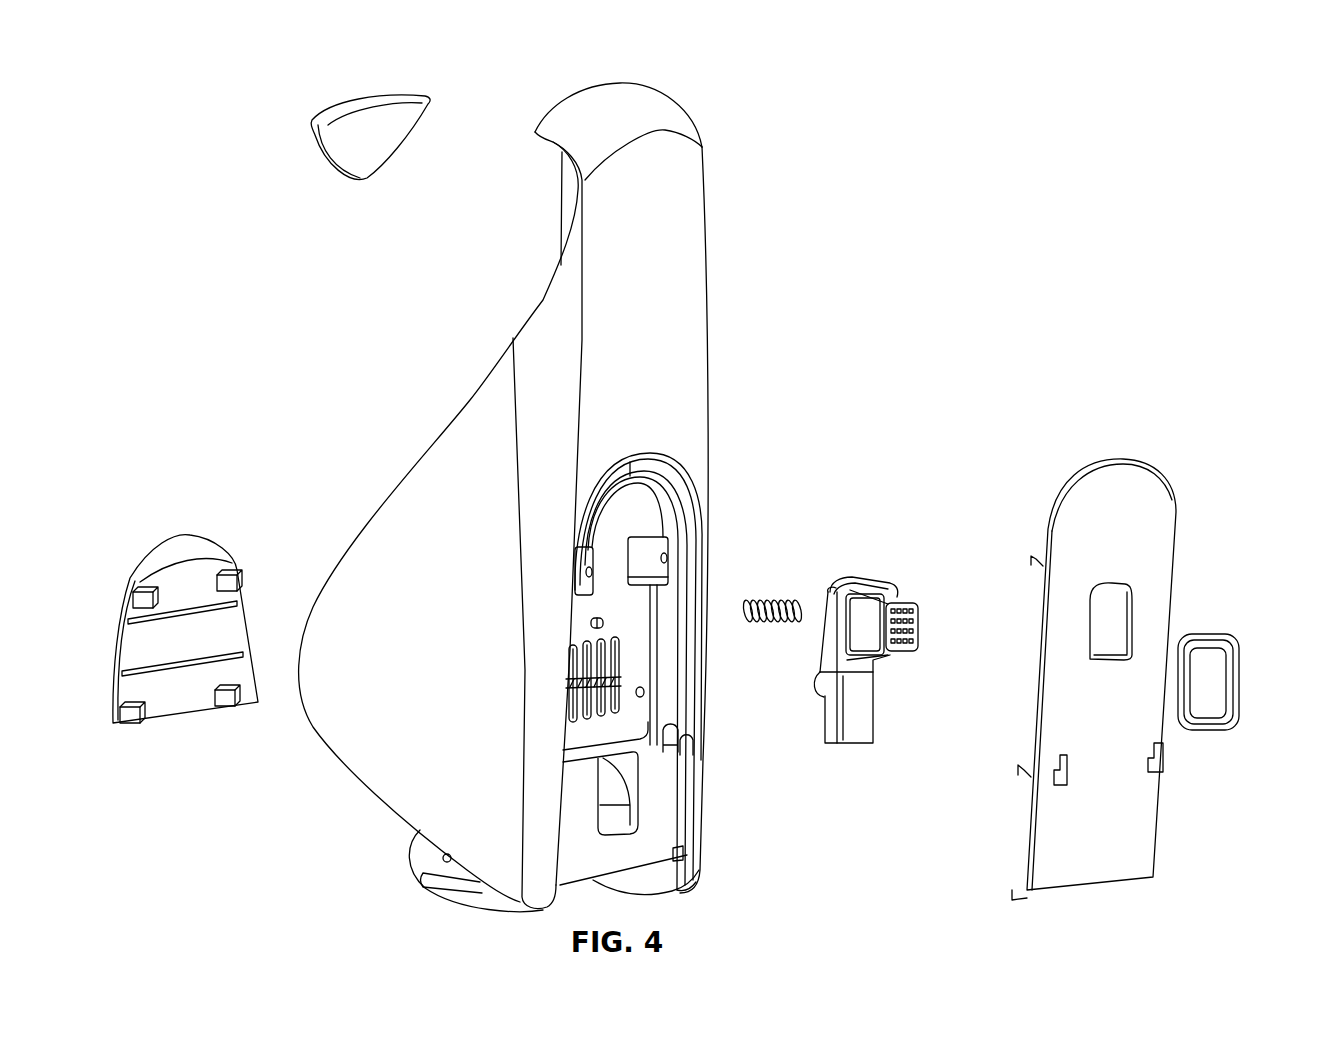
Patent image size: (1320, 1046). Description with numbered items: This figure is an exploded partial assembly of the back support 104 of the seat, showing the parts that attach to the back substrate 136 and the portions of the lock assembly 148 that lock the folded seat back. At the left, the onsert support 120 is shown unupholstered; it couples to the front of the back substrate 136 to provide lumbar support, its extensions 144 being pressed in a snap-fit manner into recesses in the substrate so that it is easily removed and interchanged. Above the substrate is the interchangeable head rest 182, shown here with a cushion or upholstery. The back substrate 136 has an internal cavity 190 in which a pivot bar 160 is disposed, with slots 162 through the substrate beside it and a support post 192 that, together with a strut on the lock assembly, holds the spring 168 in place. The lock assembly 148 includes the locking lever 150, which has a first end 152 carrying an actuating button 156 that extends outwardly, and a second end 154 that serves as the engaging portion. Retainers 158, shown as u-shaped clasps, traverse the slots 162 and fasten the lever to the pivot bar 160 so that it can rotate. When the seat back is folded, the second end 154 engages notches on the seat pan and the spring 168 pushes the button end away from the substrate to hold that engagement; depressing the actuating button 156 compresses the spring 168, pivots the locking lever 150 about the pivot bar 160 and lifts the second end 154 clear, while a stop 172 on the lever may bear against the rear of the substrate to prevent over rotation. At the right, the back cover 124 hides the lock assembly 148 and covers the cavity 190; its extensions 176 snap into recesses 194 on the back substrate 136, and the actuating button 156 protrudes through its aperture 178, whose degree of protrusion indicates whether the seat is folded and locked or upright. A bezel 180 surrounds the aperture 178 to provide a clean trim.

The back support 104 is at (1004, 438).
The onsert support 120 is at (215, 639).
The back cover 124 is at (1085, 686).
The back substrate 136 is at (591, 95).
The extensions 144 is at (241, 579).
The lock assembly 148 is at (867, 684).
The locking lever 150 is at (828, 723).
The first end 152 is at (865, 577).
The second end 154 is at (867, 707).
The actuating button 156 is at (913, 630).
The retainers 158 is at (817, 695).
The pivot bar 160 is at (567, 688).
The slots 162 is at (567, 660).
The spring 168 is at (760, 600).
The stop 172 is at (835, 582).
The extensions 176 is at (1033, 560).
The aperture 178 is at (1117, 598).
The bezel 180 is at (1230, 642).
The head rest 182 is at (417, 116).
The internal cavity 190 is at (667, 503).
The support post 192 is at (589, 623).
The recesses 194 is at (667, 558).